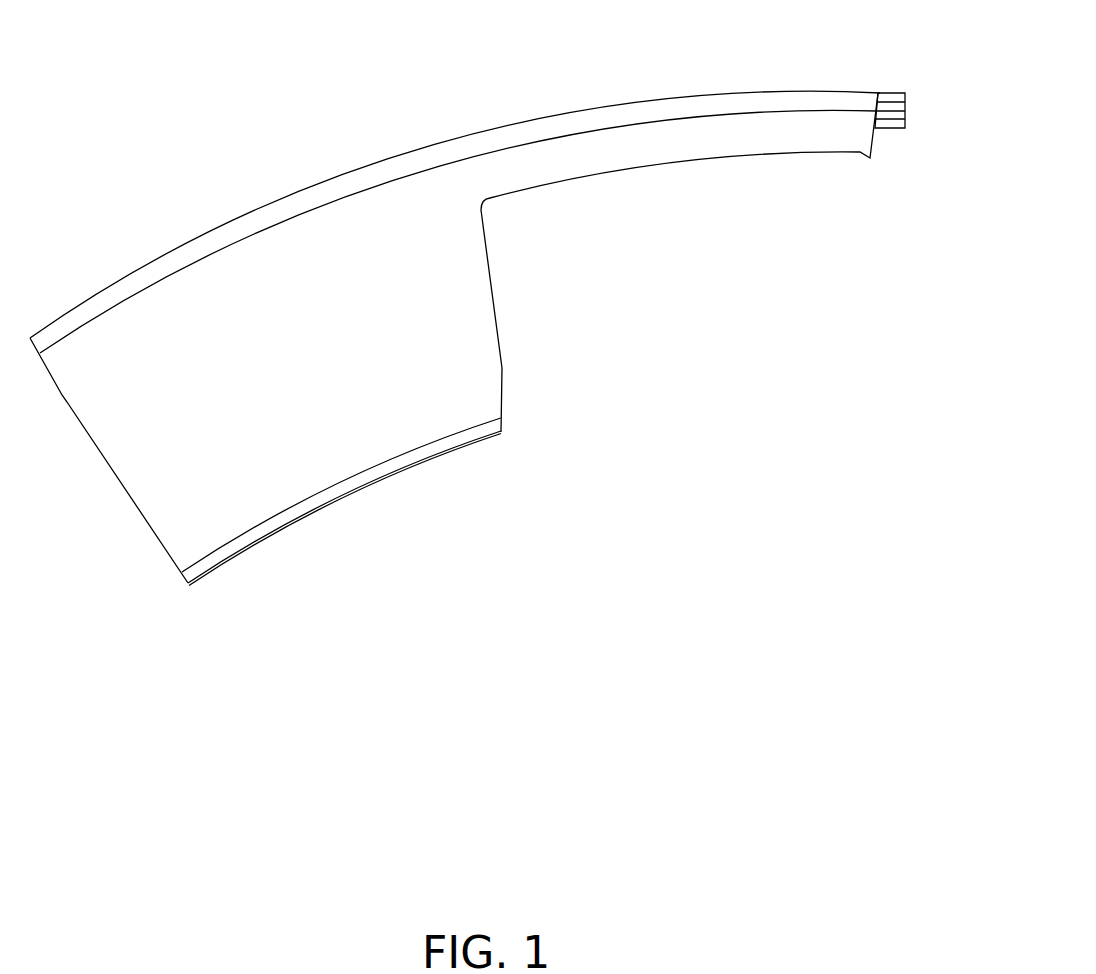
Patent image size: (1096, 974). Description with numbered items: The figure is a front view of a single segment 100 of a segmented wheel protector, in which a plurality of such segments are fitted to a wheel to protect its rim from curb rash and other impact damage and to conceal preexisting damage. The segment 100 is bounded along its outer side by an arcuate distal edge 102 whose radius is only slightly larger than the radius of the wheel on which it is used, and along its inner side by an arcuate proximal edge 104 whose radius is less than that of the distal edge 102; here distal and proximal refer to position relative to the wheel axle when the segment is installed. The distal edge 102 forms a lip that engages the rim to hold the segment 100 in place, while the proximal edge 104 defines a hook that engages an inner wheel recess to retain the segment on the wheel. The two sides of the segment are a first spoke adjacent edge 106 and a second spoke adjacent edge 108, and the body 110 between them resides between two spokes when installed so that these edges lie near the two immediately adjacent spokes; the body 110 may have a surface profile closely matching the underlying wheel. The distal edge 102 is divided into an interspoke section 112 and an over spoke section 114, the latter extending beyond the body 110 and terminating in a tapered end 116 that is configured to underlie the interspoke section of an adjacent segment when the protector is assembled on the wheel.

The segment 100 is at (510, 516).
The arcuate distal edge 102 is at (442, 138).
The arcuate proximal edge 104 is at (340, 493).
The first spoke adjacent edge 106 is at (118, 488).
The second spoke adjacent edge 108 is at (500, 318).
The body 110 is at (288, 372).
The interspoke section 112 is at (157, 260).
The over spoke section 114 is at (713, 92).
The tapered end 116 is at (893, 87).